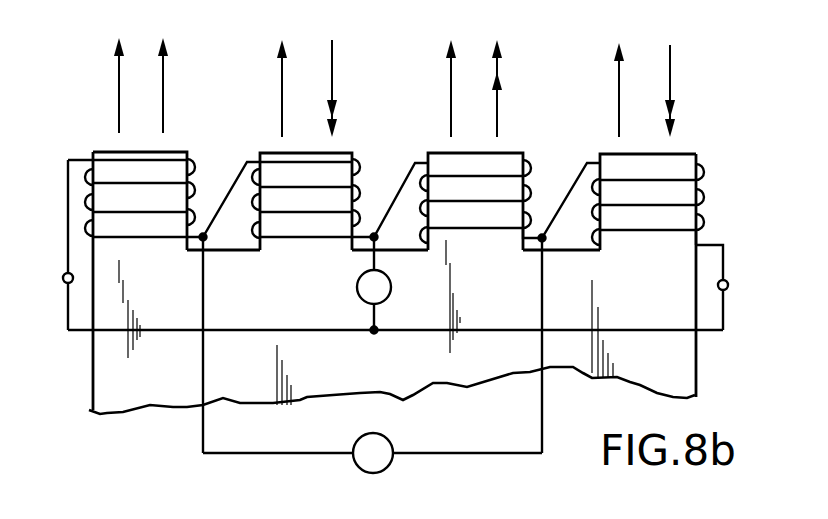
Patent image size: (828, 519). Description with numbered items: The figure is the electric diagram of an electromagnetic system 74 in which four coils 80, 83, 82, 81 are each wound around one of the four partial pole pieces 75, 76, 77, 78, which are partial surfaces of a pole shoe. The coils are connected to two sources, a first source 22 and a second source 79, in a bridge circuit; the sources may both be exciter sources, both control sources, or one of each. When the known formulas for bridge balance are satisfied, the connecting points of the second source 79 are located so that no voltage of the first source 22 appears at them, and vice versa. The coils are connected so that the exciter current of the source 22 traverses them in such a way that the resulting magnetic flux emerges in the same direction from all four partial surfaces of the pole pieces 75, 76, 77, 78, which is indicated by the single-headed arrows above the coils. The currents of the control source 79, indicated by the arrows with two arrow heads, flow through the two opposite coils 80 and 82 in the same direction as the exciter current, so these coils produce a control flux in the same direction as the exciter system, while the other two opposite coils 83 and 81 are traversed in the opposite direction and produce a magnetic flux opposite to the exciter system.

The exciter source 22 is at (368, 292).
The electromagnetic system 74 is at (77, 333).
The partial pole piece 75 is at (168, 220).
The partial pole piece 76 is at (308, 222).
The partial pole piece 77 is at (488, 215).
The partial pole piece 78 is at (678, 222).
The control source 79 is at (390, 437).
The coil 80 is at (191, 165).
The coil 81 is at (702, 170).
The coil 82 is at (528, 167).
The coil 83 is at (358, 167).